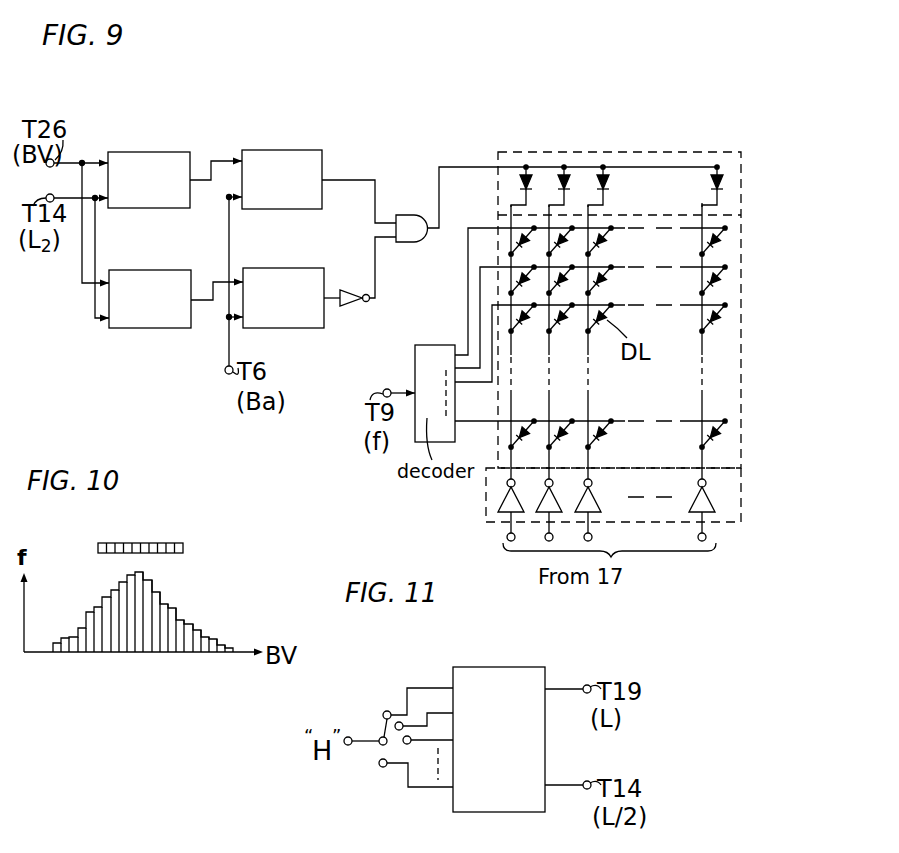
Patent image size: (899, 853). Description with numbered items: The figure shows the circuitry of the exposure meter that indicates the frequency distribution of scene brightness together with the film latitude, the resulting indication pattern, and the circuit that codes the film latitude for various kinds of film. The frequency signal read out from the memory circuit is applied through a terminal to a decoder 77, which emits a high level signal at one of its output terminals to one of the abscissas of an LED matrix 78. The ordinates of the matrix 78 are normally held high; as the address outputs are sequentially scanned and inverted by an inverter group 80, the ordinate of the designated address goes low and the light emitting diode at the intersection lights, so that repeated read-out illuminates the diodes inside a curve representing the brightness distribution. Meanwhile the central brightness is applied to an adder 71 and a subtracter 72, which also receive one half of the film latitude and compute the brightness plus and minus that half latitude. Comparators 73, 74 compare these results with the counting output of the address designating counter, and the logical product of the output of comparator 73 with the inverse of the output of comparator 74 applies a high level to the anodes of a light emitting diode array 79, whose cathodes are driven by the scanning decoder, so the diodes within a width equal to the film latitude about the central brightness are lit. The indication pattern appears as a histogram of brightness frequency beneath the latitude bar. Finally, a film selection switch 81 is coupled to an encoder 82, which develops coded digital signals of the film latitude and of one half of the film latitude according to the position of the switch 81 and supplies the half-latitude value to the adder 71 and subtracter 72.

In FIG. 9, the adder 71 is at (158, 152).
In FIG. 9, the subtracter 72 is at (158, 270).
In FIG. 9, the comparator 73 is at (286, 150).
In FIG. 9, the comparator 74 is at (292, 268).
In FIG. 9, the decoder 77 is at (430, 345).
In FIG. 9, the LED matrix 78 is at (741, 285).
In FIG. 10, the LED matrix 78 is at (173, 600).
In FIG. 9, the light emitting diode array 79 is at (650, 152).
In FIG. 10, the light emitting diode array 79 is at (175, 543).
In FIG. 9, the inverter group 80 is at (743, 485).
In FIG. 11, the film selection switch 81 is at (382, 712).
In FIG. 11, the encoder 82 is at (506, 678).